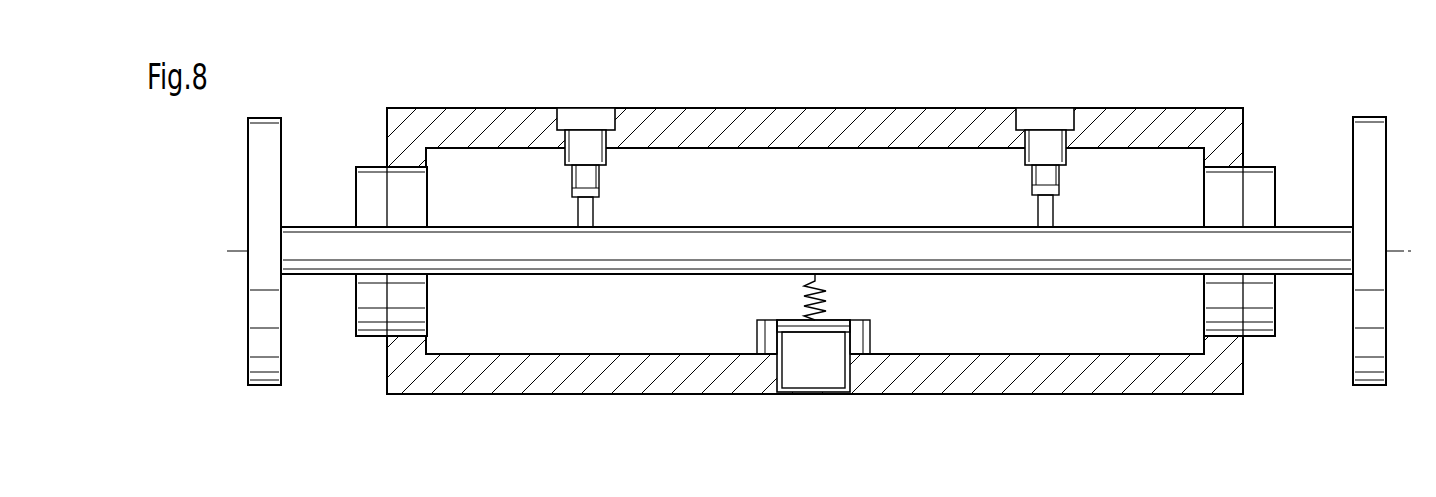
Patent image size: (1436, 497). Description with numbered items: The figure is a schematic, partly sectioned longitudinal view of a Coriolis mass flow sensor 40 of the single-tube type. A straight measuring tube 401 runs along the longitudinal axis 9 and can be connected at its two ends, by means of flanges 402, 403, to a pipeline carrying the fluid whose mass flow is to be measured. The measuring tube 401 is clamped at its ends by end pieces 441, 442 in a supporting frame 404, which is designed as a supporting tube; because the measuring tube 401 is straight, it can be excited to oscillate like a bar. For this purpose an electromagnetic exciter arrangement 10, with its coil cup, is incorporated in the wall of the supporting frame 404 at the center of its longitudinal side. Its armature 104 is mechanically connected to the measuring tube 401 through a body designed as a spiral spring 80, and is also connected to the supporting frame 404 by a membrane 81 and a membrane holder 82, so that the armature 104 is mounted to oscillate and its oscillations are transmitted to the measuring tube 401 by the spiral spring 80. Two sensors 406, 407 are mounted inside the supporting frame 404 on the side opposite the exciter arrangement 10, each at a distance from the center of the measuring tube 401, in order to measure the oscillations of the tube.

The longitudinal axis 9 is at (305, 252).
The exciter arrangement 10 is at (832, 380).
The mass flow sensor 40 is at (438, 100).
The spiral spring 80 is at (827, 272).
The membrane 81 is at (778, 312).
The membrane holder 82 is at (760, 340).
The armature 104 is at (847, 320).
The measuring tube 401 is at (707, 227).
The flange 402 is at (270, 120).
The flange 403 is at (1373, 125).
The supporting frame 404 is at (487, 118).
The sensor 406 is at (600, 113).
The sensor 407 is at (1053, 112).
The end piece 441 is at (370, 175).
The end piece 442 is at (1263, 177).